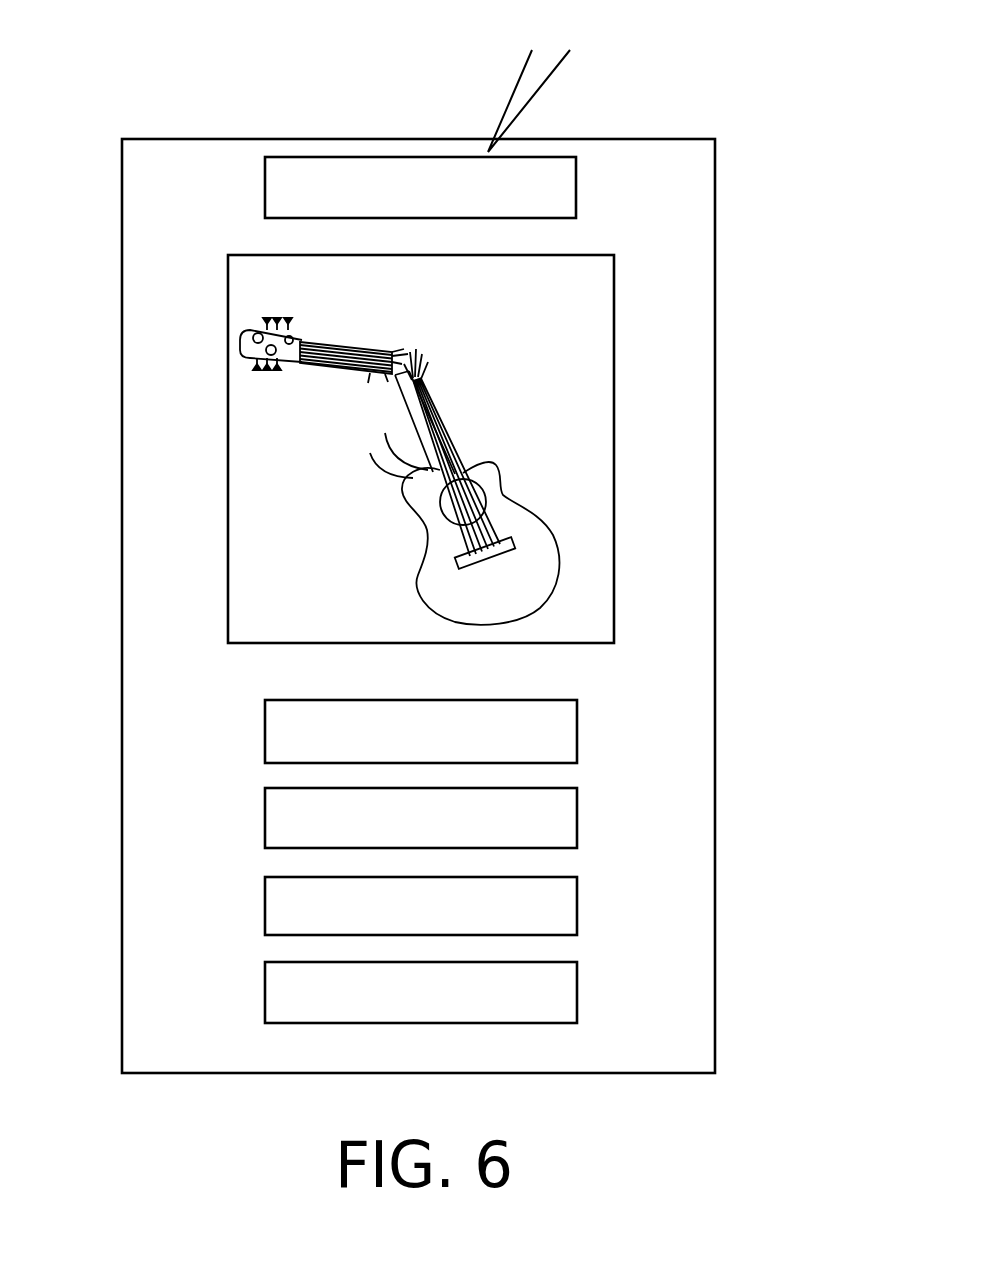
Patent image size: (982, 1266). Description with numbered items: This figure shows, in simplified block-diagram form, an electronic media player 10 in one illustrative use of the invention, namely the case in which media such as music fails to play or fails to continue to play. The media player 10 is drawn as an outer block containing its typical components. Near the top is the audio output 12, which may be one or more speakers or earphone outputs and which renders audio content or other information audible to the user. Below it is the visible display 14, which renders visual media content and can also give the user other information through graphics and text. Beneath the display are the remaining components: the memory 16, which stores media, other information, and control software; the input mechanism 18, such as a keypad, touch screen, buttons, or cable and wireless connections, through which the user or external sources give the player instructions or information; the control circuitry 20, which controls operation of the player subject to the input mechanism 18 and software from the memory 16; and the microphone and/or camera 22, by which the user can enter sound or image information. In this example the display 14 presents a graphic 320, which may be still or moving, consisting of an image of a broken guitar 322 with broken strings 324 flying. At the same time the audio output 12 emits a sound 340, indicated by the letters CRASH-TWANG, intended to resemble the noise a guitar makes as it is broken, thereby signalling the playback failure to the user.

The electronic media player 10 is at (122, 222).
The audio output 12 is at (576, 188).
The visible display 14 is at (614, 288).
The memory 16 is at (577, 729).
The input mechanism 18 is at (577, 810).
The control circuitry 20 is at (577, 895).
The microphone and/or camera 22 is at (577, 978).
The graphic 320 is at (377, 520).
The broken guitar 322 is at (528, 503).
The broken strings 324 is at (335, 368).
The sound 340 is at (778, 70).